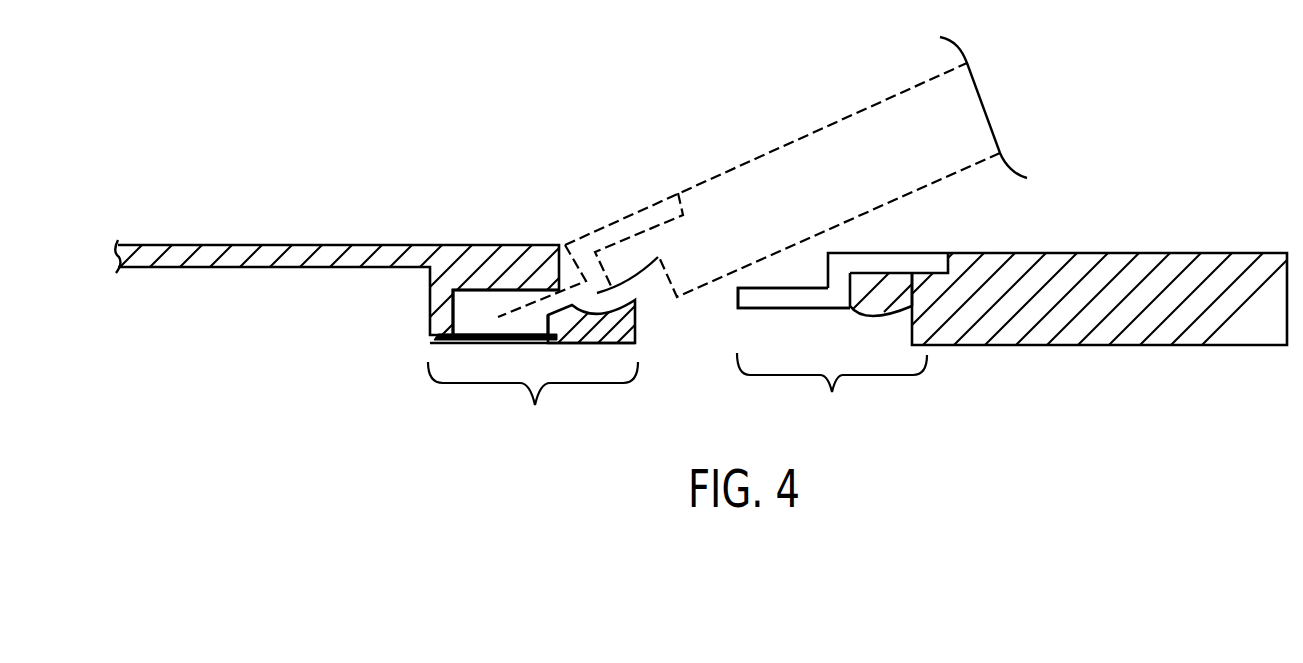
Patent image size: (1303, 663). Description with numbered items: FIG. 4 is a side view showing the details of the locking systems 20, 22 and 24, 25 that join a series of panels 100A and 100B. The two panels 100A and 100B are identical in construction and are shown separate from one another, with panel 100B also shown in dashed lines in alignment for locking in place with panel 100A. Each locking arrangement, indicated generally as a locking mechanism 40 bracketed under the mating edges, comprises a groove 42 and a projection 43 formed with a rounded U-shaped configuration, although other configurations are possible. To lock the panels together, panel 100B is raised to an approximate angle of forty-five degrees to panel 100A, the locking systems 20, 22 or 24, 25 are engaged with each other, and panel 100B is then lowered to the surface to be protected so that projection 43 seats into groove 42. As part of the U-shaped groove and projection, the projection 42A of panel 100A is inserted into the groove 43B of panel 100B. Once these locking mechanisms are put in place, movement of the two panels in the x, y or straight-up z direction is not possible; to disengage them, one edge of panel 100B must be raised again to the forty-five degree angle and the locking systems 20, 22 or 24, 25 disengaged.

The panel 100A is at (258, 245).
The panel 100B is at (1098, 252).
The locking system 22 is at (490, 298).
The locking system 25 is at (506, 312).
The locking system 24 is at (775, 302).
The locking system 20 is at (794, 298).
The locking mechanism 40 is at (677, 395).
The groove 42 is at (592, 312).
The projection 42A is at (635, 300).
The projection 43 is at (873, 318).
The groove 43B is at (910, 310).